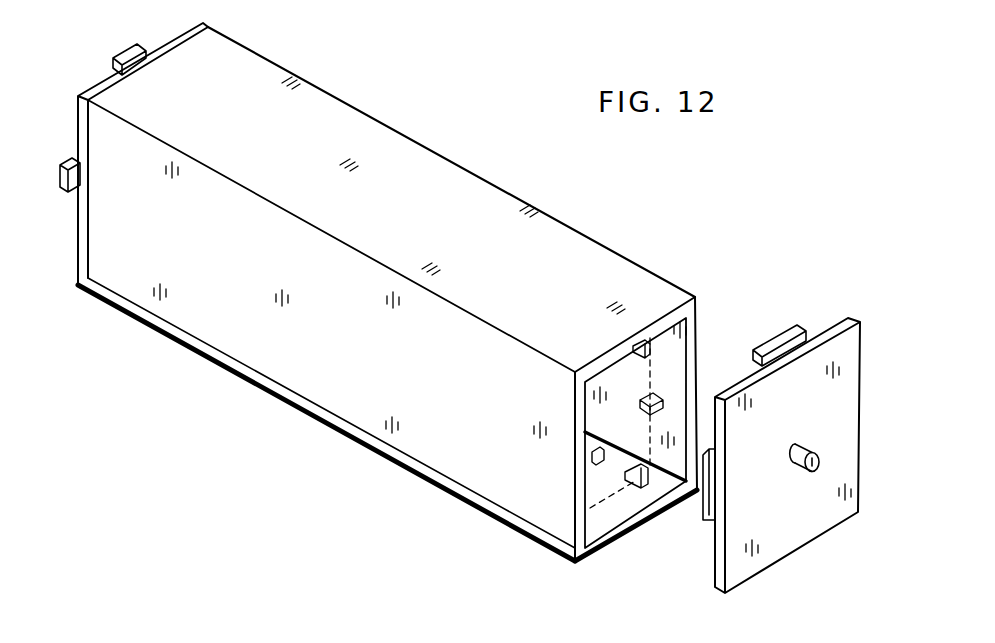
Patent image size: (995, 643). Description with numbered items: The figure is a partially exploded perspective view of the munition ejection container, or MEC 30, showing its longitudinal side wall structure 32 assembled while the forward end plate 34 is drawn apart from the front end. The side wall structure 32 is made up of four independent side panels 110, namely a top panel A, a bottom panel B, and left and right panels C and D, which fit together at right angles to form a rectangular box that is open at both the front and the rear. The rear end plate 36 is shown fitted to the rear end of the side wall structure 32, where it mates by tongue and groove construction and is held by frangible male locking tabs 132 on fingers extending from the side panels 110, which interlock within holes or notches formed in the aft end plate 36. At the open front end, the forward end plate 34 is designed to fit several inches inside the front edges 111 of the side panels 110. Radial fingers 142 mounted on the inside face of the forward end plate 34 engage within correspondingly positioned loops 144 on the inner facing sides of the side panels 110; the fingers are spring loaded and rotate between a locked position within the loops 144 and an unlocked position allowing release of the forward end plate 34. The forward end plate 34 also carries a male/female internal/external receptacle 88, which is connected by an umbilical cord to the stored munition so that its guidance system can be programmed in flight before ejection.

The munition ejection container 30 is at (458, 138).
The longitudinal side wall structure 32 is at (566, 241).
The forward end plate 34 is at (846, 345).
The rear end plate 36 is at (78, 133).
The male/female internal/external receptacle 88 is at (812, 445).
The side panels 110 is at (373, 120).
The front edges 111 is at (665, 322).
The frangible male locking tabs 132 is at (125, 50).
The radial fingers 142 is at (795, 334).
The loops 144 is at (648, 396).
The top panel A is at (297, 78).
The bottom panel B is at (648, 505).
The left panel C is at (497, 493).
The right panel D is at (700, 345).